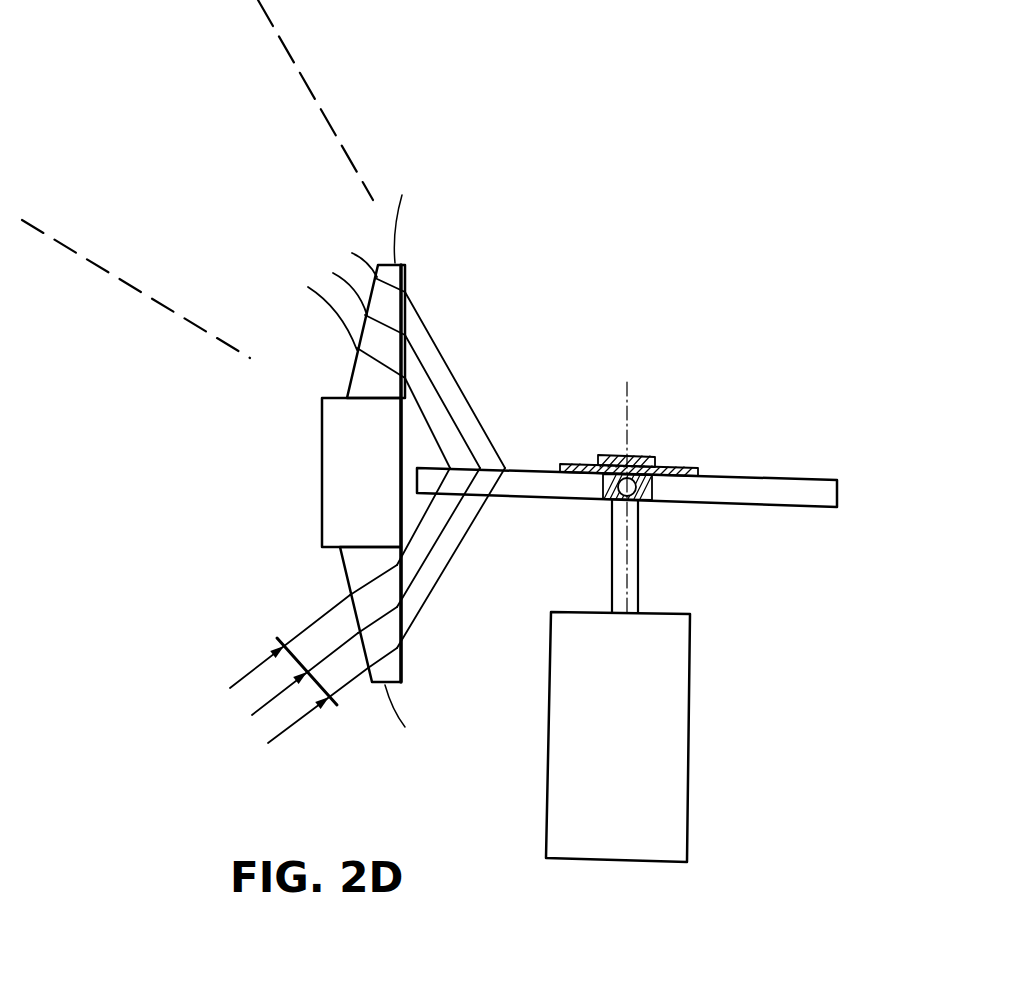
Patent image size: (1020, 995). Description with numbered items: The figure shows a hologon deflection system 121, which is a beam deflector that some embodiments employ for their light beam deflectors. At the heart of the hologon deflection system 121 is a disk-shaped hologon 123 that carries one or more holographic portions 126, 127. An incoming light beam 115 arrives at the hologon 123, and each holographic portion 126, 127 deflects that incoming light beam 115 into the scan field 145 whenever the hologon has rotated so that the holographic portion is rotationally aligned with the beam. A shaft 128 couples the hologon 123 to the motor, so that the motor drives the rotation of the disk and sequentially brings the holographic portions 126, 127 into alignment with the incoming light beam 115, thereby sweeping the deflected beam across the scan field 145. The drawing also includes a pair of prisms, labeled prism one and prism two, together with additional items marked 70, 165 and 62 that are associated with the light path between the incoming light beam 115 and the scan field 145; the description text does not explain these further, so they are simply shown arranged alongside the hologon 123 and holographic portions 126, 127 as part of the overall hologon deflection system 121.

The scan field 145 is at (131, 138).
The hologon deflection system 121 is at (656, 258).
The prism 2 70 is at (407, 268).
The wavefronts 165 is at (333, 295).
The holographic portion 126 is at (493, 468).
The incoming light beam 115 is at (270, 678).
The disk 62 is at (840, 488).
The holographic portion 127 is at (750, 478).
The shaft 128 is at (635, 572).
The disk-shaped hologon 123 is at (794, 547).